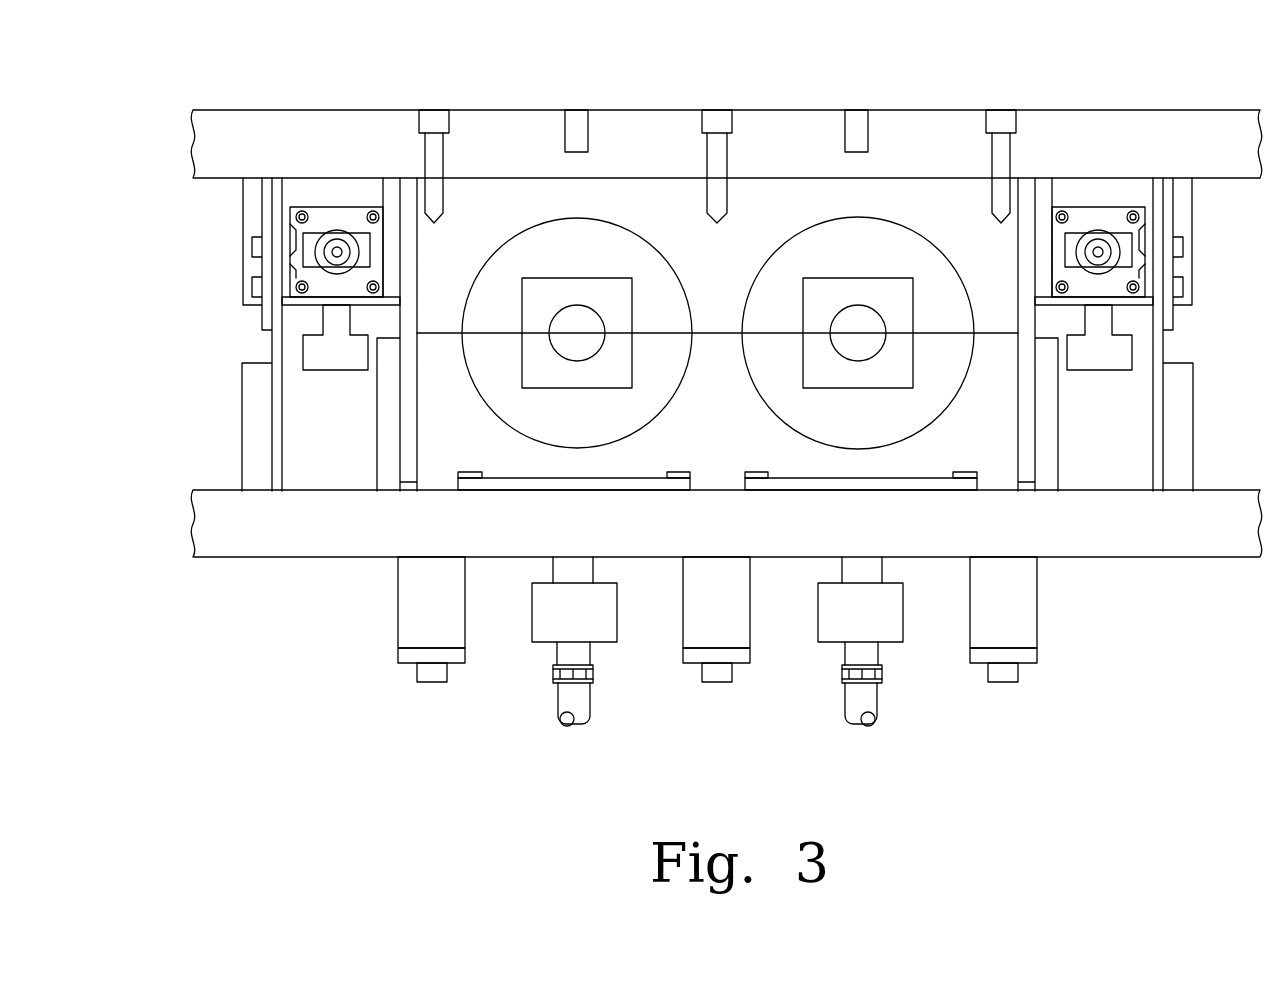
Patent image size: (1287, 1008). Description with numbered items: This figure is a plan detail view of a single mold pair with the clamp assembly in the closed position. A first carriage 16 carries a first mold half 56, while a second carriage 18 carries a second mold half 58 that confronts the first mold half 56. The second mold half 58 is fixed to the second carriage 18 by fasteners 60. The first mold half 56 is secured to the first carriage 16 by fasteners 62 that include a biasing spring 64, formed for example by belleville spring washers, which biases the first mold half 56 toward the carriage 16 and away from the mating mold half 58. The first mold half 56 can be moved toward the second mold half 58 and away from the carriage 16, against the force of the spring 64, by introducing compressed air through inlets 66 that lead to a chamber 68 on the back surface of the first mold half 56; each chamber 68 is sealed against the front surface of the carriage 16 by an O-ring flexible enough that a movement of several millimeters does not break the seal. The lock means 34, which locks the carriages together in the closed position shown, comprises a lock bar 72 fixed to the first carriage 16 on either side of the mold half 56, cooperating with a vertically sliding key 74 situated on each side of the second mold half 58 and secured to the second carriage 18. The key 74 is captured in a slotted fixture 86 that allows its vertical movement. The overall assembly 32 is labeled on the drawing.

The first carriage 16 is at (1137, 530).
The second carriage 18 is at (1140, 132).
The die assembly 32 is at (763, 197).
The lock means 34 is at (295, 265).
The first mold half 56 is at (773, 455).
The second mold half 58 is at (682, 192).
The fasteners 60 is at (433, 197).
The fasteners 62 is at (433, 683).
The biasing spring 64 is at (440, 628).
The inlets 66 is at (594, 617).
The chamber 68 is at (540, 488).
The lock bar 72 is at (295, 345).
The vertically sliding key 74 is at (320, 252).
The slotted fixture 86 is at (295, 242).